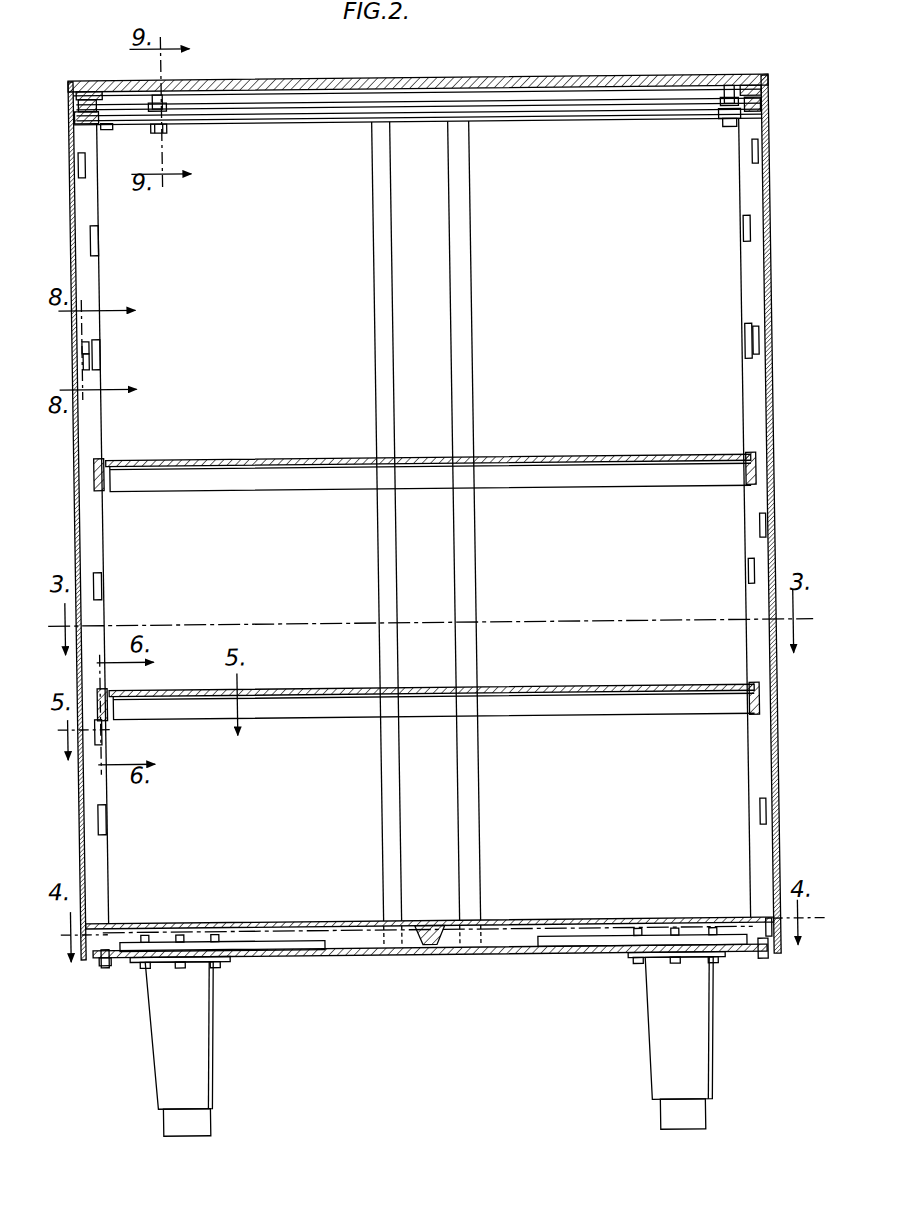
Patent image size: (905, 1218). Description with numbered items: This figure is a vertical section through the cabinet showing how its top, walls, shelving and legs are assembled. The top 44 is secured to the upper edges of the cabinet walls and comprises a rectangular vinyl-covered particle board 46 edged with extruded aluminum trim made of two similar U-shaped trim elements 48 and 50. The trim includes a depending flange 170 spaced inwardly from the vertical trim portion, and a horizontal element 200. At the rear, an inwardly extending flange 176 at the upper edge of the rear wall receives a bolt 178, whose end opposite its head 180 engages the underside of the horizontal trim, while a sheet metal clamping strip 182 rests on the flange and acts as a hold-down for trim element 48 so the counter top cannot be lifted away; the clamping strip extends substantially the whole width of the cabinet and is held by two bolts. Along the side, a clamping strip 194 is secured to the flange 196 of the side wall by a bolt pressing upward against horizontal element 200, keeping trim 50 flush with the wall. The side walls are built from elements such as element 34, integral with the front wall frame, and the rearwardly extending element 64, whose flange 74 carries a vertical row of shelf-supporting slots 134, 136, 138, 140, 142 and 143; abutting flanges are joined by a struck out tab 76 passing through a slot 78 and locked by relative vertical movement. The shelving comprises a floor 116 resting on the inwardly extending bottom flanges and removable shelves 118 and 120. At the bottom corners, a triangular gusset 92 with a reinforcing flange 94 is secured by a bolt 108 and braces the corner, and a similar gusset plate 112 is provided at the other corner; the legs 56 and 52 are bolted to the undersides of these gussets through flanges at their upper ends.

The side wall element 34 is at (768, 445).
The top 44 is at (552, 81).
The vinyl-covered particle board 46 is at (462, 84).
The trim element 48 is at (72, 100).
The trim element 50 is at (770, 98).
The leg 52 is at (665, 1055).
The leg 56 is at (165, 1075).
The rearwardly extending element 64 is at (68, 240).
The flange 74 is at (96, 880).
The struck out tab 76 is at (78, 368).
The slot 78 is at (80, 352).
The triangular gusset 92 is at (280, 958).
The reinforcing flange 94 is at (285, 943).
The bolt 108 is at (92, 968).
The gusset plate 112 is at (545, 953).
The floor 116 is at (512, 924).
The shelf 118 is at (535, 691).
The shelf 120 is at (536, 461).
The shelf-supporting slot 134 is at (97, 243).
The shelf-supporting slot 136 is at (97, 358).
The shelf-supporting slot 138 is at (96, 461).
The shelf-supporting slot 140 is at (94, 591).
The shelf-supporting slot 142 is at (100, 695).
The shelf-supporting slot 143 is at (95, 826).
The depending flange 170 is at (268, 105).
The flange 176 is at (325, 126).
The bolt 178 is at (162, 100).
The head 180 is at (168, 129).
The clamping strip 182 is at (248, 112).
The clamping strip 194 is at (712, 118).
The flange 196 is at (756, 119).
The horizontal element 200 is at (730, 92).